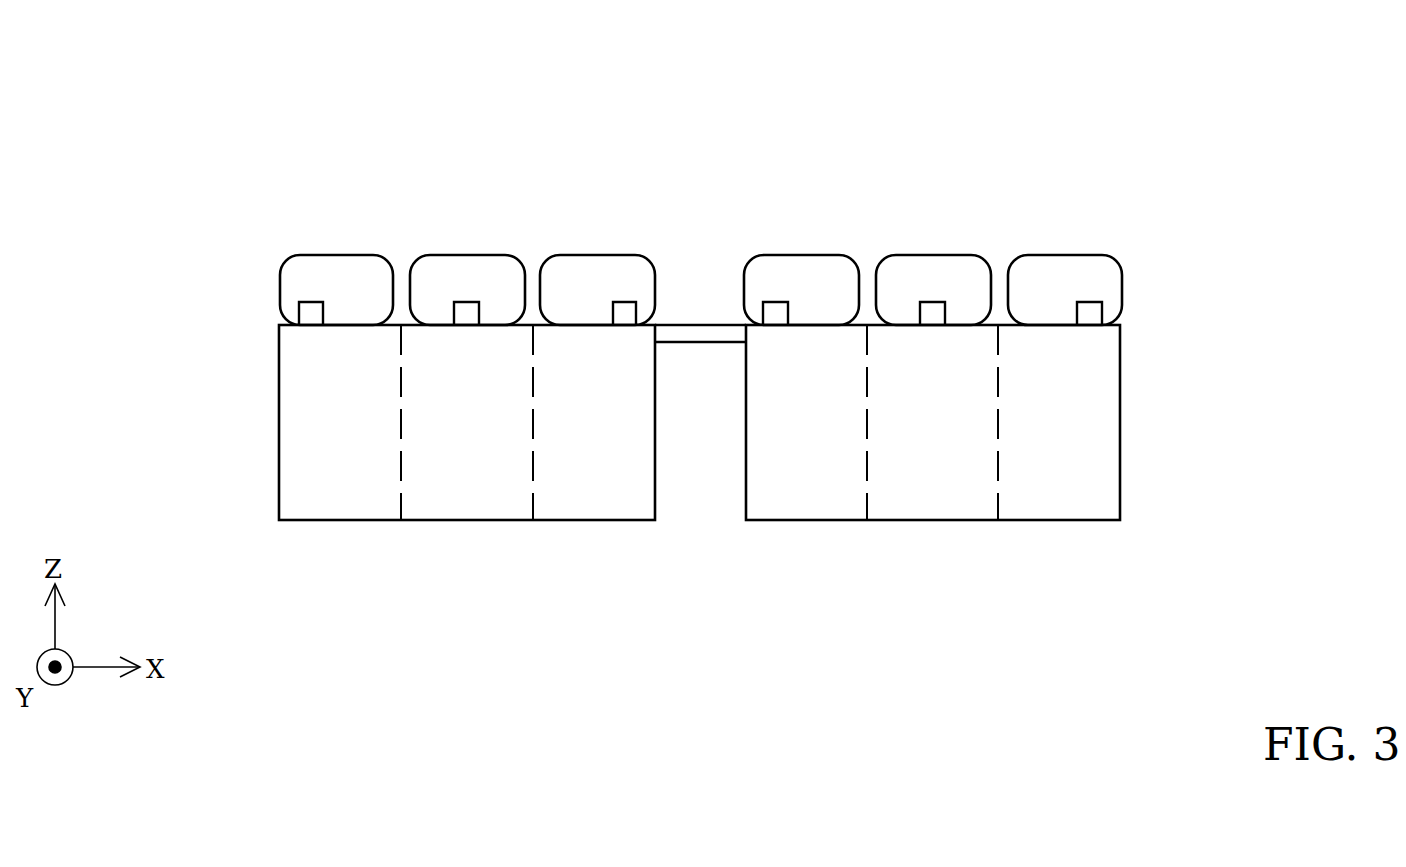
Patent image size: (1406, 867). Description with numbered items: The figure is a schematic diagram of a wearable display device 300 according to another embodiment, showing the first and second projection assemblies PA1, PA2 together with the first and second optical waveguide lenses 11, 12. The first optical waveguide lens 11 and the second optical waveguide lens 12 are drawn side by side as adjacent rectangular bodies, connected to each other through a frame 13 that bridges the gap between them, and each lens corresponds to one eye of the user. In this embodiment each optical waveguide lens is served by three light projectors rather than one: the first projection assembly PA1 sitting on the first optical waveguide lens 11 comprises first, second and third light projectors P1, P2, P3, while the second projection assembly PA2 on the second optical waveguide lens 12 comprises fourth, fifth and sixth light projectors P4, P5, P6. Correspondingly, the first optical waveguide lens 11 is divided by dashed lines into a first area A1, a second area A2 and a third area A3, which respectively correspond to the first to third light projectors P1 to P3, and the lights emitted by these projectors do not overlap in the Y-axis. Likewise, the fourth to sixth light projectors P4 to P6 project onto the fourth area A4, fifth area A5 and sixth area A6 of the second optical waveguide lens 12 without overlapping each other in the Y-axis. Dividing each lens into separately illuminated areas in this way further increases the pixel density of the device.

The wearable display device 300 is at (222, 70).
The first optical waveguide lens 11 is at (256, 420).
The second optical waveguide lens 12 is at (1145, 419).
The frame 13 is at (702, 335).
The first light projector P1 is at (359, 283).
The second light projector P2 is at (468, 283).
The third light projector P3 is at (581, 283).
The fourth light projector P4 is at (822, 283).
The fifth light projector P5 is at (933, 283).
The sixth light projector P6 is at (1043, 283).
The first projection assembly PA1 is at (598, 178).
The second projection assembly PA2 is at (1063, 178).
The first area A1 is at (362, 438).
The second area A2 is at (484, 438).
The third area A3 is at (615, 438).
The fourth area A4 is at (826, 438).
The fifth area A5 is at (952, 438).
The sixth area A6 is at (1080, 438).